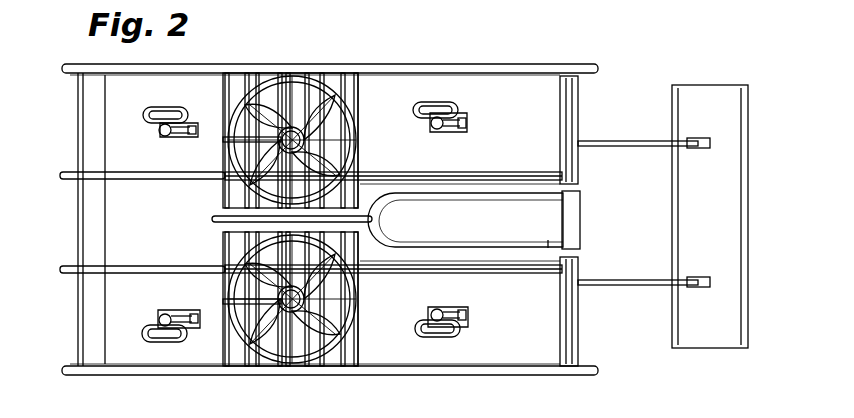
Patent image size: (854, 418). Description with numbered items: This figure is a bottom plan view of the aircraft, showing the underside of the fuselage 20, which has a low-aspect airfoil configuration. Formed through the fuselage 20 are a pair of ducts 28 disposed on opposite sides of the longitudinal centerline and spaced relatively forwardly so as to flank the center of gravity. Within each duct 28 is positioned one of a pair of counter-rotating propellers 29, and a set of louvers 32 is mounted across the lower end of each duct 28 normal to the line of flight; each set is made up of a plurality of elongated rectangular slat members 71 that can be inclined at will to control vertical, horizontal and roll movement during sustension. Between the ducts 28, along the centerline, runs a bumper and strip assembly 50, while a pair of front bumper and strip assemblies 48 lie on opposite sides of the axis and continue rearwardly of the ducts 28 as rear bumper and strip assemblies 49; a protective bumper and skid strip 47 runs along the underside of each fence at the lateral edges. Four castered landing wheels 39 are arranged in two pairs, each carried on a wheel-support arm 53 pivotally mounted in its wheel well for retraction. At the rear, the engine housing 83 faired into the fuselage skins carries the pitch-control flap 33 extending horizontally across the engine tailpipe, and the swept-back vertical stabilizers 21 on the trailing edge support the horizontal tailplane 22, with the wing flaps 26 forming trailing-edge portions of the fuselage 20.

The fuselage 20 is at (92, 311).
The vertical stabilizers 21 is at (634, 128).
The horizontal tailplane 22 is at (672, 210).
The wing flaps 26 is at (580, 118).
The ducts 28 is at (282, 79).
The propellers 29 is at (332, 100).
The louvers 32 is at (351, 154).
The pitch-control flap 33 is at (583, 213).
The landing wheels 39 is at (166, 107).
The protective bumper and skid strip 47 is at (238, 55).
The front bumper and strip assemblies 48 is at (140, 178).
The rear bumper and strip assemblies 49 is at (501, 171).
The bumper and strip assembly 50 is at (209, 222).
The wheel-support arm 53 is at (178, 137).
The slat members 71 is at (330, 131).
The engine housing 83 is at (548, 248).